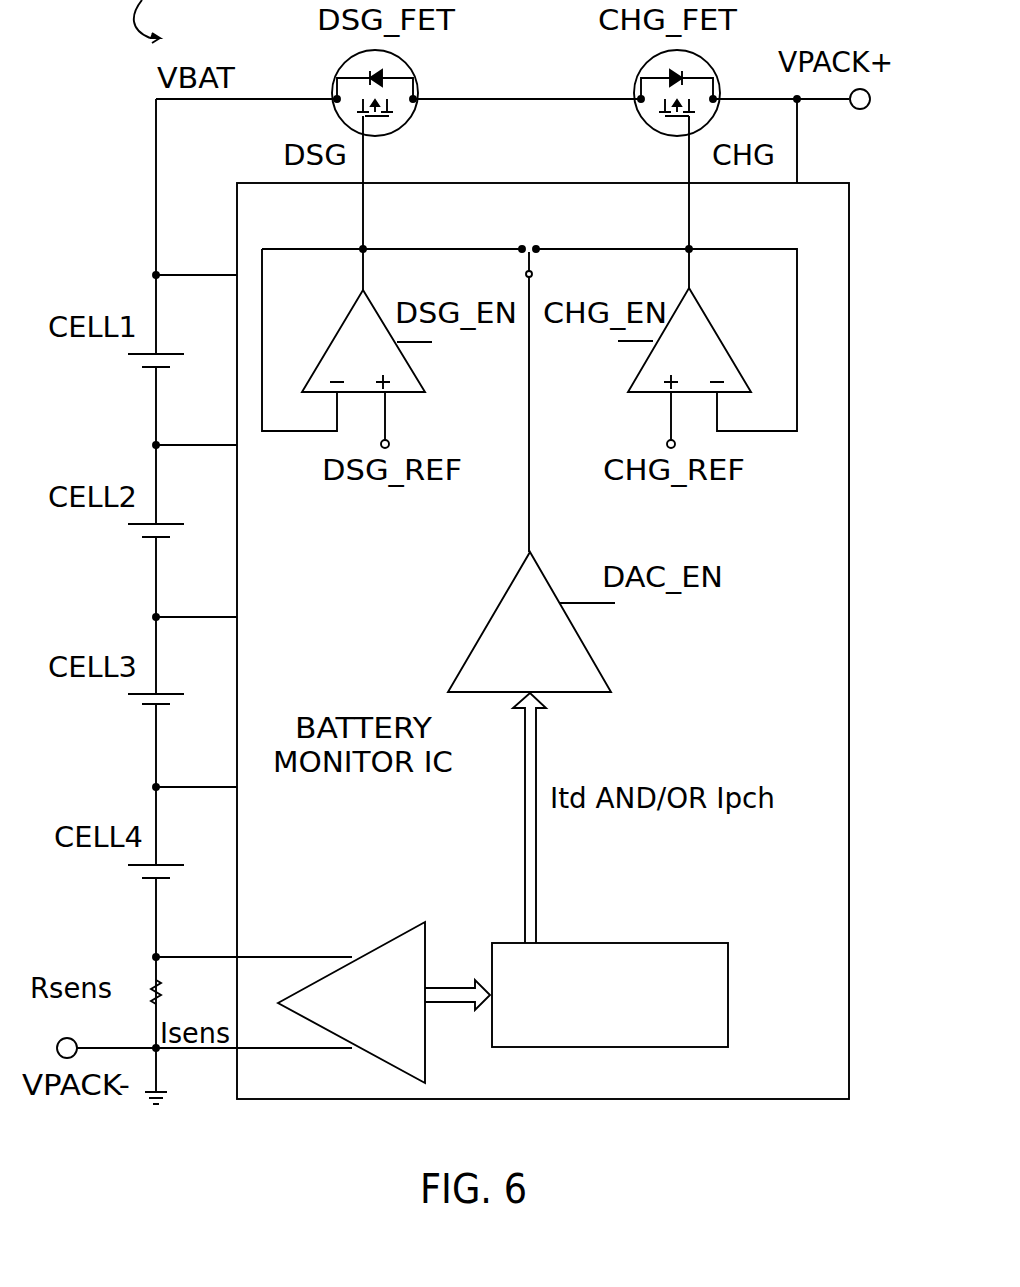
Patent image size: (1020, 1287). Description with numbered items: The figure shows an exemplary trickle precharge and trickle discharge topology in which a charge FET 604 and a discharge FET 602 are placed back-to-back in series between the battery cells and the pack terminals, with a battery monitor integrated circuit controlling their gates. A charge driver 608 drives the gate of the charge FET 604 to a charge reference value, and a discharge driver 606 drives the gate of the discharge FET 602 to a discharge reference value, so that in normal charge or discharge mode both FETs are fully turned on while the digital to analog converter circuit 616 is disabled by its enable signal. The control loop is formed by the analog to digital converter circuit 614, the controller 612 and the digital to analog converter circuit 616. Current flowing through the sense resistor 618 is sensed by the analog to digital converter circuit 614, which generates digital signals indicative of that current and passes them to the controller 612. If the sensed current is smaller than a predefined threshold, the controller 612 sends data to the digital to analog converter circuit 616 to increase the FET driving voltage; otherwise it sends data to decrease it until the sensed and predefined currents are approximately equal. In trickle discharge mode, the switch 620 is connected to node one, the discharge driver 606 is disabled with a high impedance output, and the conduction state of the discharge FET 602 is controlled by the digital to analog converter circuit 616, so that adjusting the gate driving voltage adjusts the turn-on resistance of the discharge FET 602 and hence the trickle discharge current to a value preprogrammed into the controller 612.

The discharge FET 602 is at (418, 78).
The charge FET 604 is at (640, 92).
The discharge driver 606 is at (330, 338).
The charge driver 608 is at (726, 338).
The controller 612 is at (608, 943).
The analog to digital converter circuit (ADC) 614 is at (380, 940).
The digital to analog converter circuit (DAC) 616 is at (550, 578).
The sense resistor Rsens 618 is at (151, 982).
The switch K1 620 is at (527, 242).